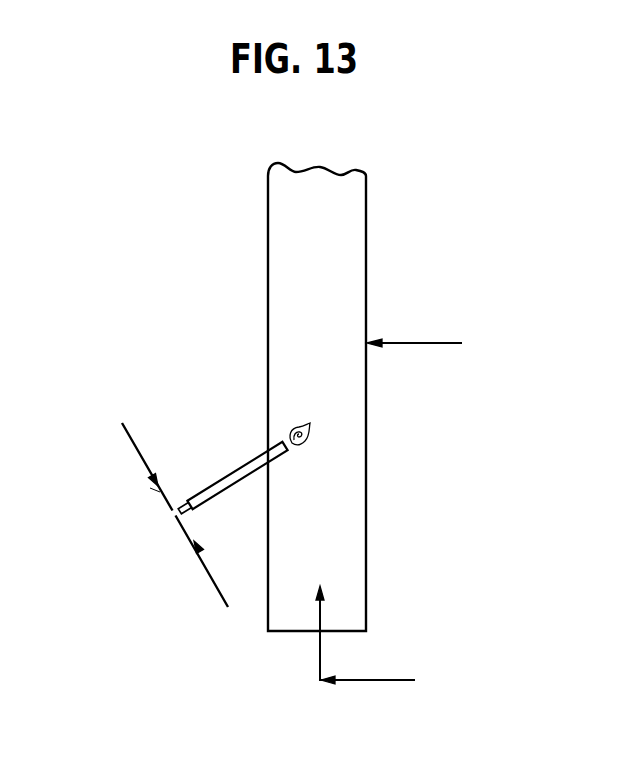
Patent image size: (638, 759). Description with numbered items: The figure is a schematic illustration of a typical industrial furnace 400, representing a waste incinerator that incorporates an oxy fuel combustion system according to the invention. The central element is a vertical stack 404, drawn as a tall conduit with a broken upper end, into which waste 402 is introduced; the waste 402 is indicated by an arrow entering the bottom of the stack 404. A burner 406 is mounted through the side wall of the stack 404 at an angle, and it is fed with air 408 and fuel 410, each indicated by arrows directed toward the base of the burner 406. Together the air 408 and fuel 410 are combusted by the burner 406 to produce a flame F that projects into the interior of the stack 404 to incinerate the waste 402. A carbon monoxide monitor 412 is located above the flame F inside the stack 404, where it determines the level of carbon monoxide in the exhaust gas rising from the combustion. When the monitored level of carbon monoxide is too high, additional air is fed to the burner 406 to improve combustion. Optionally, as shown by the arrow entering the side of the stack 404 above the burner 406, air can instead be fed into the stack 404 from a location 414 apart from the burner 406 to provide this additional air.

The industrial furnace 400 is at (403, 240).
The waste 402 is at (387, 680).
The stack 404 is at (366, 293).
The burner 406 is at (222, 478).
The air 408 is at (212, 577).
The fuel 410 is at (162, 492).
The carbon monoxide monitor 412 is at (285, 280).
The location apart from the burner 414 is at (420, 345).
The flame F is at (304, 444).